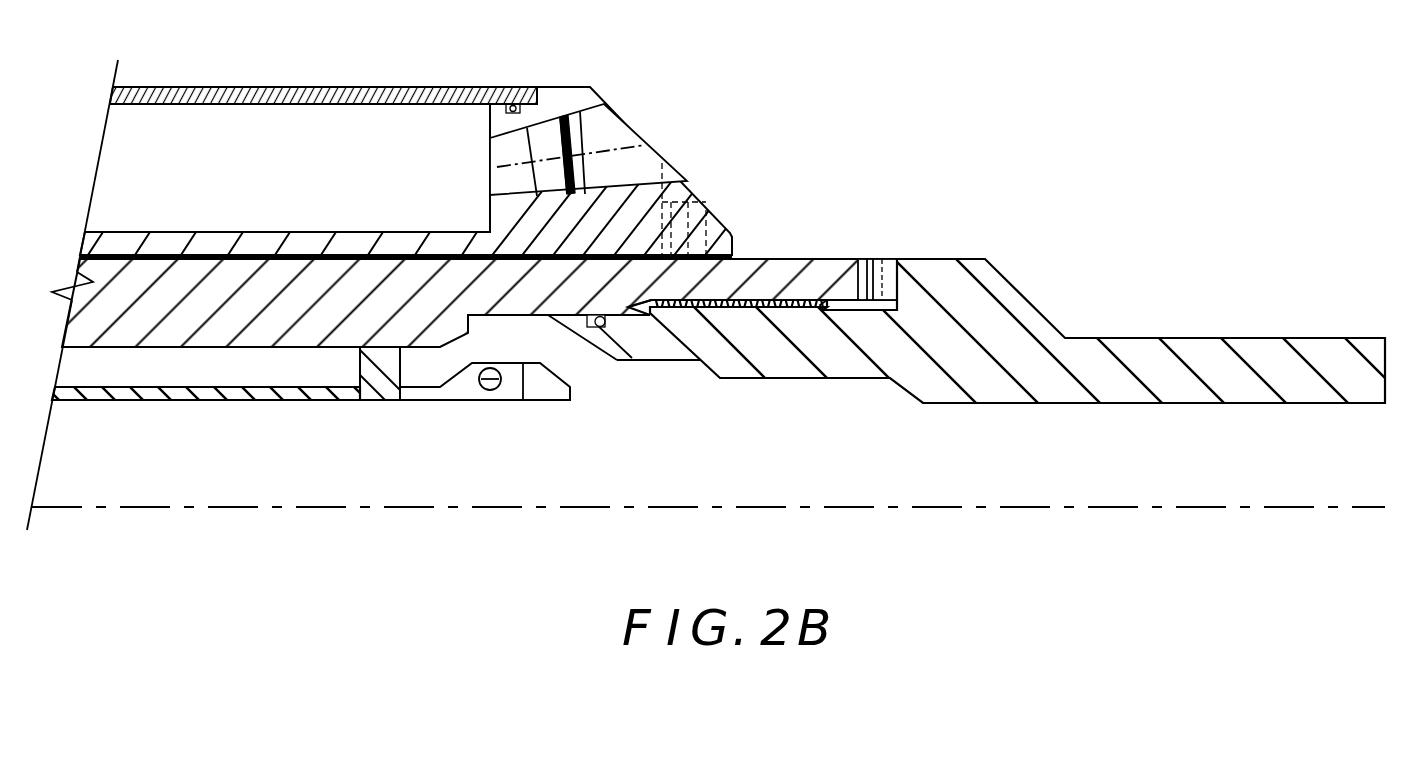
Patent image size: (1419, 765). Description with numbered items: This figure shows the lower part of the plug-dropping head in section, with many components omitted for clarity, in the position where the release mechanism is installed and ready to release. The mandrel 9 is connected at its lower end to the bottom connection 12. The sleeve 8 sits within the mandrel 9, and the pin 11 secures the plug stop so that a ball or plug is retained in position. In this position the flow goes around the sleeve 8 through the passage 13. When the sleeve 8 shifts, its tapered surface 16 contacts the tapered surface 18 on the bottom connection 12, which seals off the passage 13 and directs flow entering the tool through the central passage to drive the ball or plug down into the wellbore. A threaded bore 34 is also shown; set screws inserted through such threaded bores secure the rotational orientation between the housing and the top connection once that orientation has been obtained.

The threaded bore 34 is at (707, 208).
The mandrel 9 is at (808, 258).
The bottom connection 12 is at (1060, 337).
The tapered surface 18 is at (704, 371).
The tapered surface 16 is at (575, 365).
The pin 11 is at (498, 383).
The sleeve 8 is at (270, 383).
The passage 13 is at (200, 362).